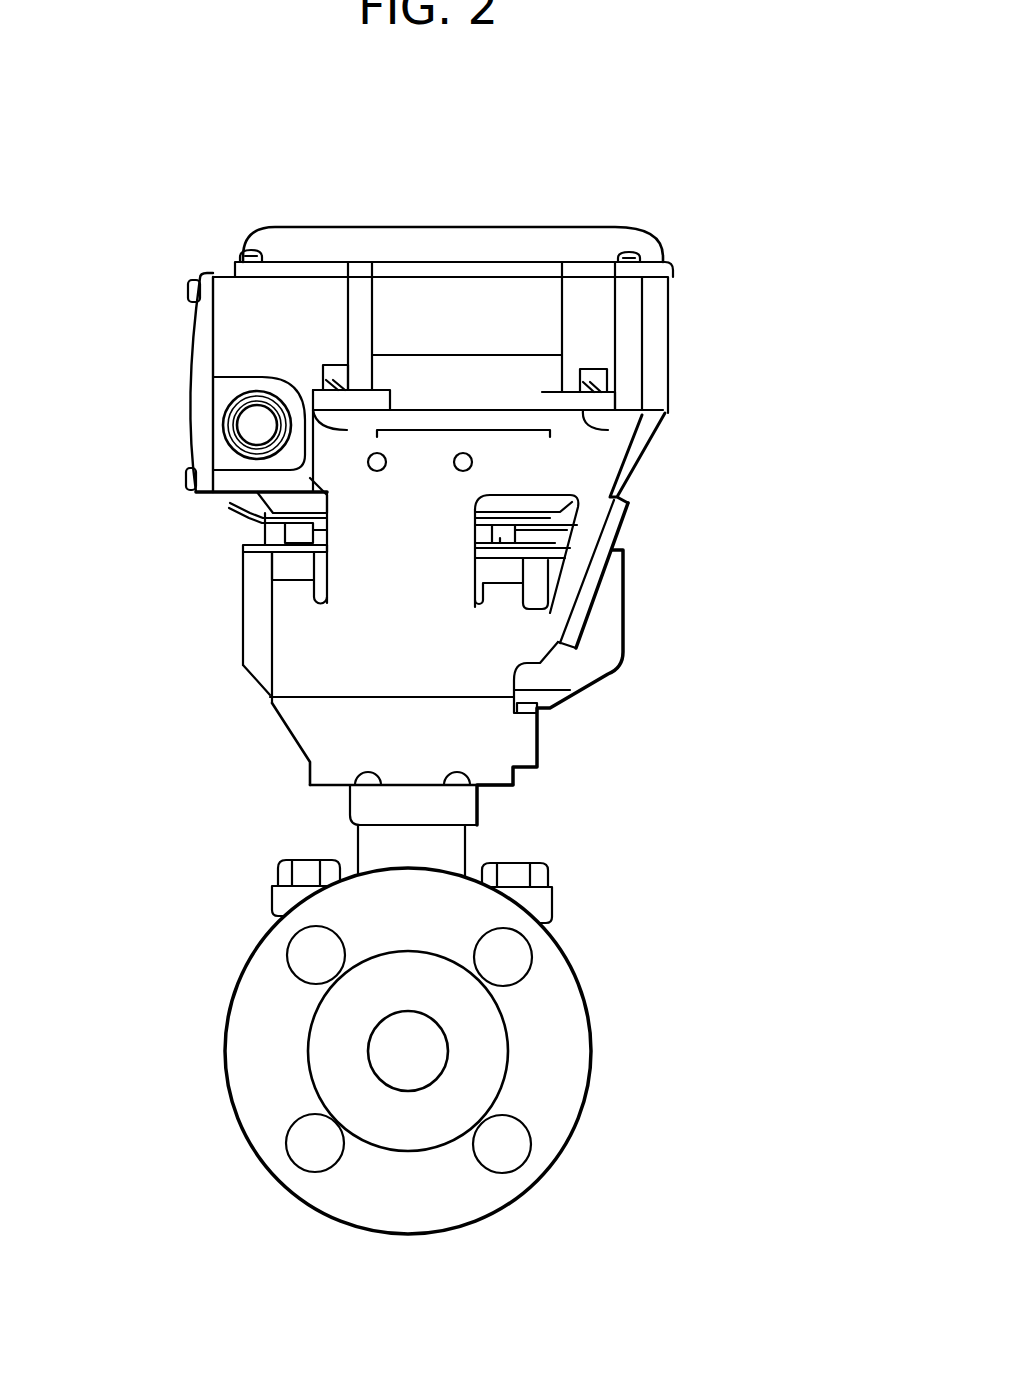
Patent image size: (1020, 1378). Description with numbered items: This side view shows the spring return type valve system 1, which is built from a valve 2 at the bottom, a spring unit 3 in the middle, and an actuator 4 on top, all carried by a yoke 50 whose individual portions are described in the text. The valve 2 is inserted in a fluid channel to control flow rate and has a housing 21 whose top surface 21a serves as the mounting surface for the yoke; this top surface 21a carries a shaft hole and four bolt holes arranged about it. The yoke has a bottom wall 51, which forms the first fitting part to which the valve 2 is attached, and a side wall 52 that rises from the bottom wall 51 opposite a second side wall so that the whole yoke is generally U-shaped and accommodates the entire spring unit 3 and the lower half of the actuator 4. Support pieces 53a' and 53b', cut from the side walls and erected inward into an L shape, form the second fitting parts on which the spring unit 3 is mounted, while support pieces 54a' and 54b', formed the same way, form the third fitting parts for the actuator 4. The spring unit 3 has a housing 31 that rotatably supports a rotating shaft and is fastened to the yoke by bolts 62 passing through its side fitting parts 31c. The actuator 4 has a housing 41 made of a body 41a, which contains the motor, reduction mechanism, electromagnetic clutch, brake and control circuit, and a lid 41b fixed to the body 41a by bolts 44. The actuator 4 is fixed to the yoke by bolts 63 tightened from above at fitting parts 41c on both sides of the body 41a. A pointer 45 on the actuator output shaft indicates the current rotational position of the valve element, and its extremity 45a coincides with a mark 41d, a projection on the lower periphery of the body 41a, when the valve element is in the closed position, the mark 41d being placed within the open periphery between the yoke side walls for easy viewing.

The spring return type valve system 1 is at (172, 232).
The valve 2 is at (584, 977).
The spring unit 3 is at (622, 657).
The actuator 4 is at (435, 229).
The housing 21 is at (468, 835).
The top surface 21a is at (417, 783).
The housing 31 is at (590, 672).
The fitting parts 31c is at (310, 565).
The housing 41 is at (774, 237).
The body 41a is at (655, 322).
The lid 41b is at (680, 262).
The fitting parts 41c is at (648, 388).
The mark 41d is at (250, 495).
The bolts 44 is at (247, 248).
The pointer 45 is at (577, 507).
The extremity 45a is at (232, 506).
The connecting member 50 is at (270, 666).
The bottom wall 51 is at (323, 786).
The side wall 52 is at (317, 683).
The support piece 53a' is at (215, 627).
The support piece 53b' is at (615, 574).
The support piece 54a' is at (204, 382).
The support piece 54b' is at (682, 458).
The bolts 62 is at (285, 540).
The bolts 63 is at (596, 366).